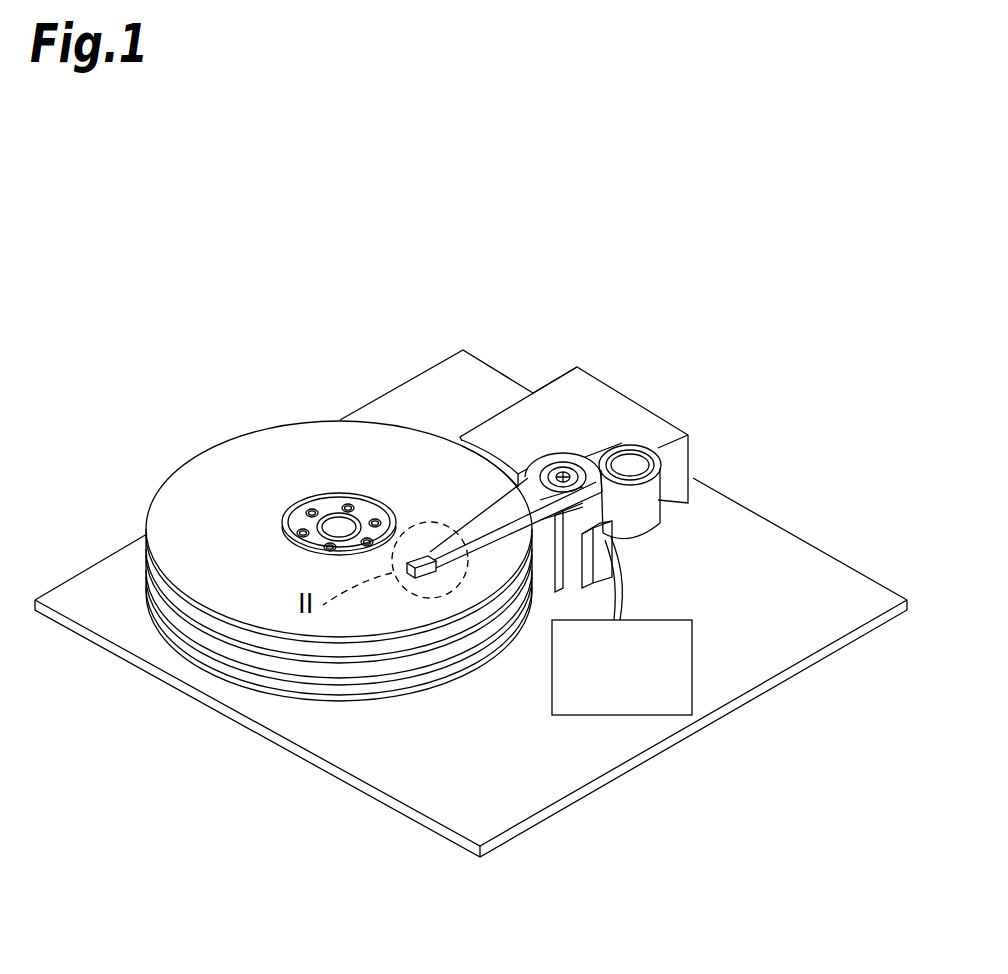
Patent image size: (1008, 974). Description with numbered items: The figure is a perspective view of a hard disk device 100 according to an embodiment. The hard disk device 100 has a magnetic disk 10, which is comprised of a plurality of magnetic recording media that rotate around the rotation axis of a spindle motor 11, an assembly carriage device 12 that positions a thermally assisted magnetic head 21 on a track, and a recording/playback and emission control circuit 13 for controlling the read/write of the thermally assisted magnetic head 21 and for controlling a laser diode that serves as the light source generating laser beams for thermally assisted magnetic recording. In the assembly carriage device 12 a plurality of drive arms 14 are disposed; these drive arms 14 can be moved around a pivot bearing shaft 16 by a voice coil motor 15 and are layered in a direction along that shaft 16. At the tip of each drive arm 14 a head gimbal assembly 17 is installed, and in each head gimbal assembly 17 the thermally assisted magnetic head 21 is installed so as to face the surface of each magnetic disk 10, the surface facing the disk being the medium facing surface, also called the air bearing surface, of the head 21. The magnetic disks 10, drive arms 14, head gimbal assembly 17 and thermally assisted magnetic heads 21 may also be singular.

The hard disk device 100 is at (350, 240).
The magnetic disk 10 is at (215, 425).
The spindle motor 11 is at (336, 516).
The assembly carriage device 12 is at (594, 396).
The control circuit 13 is at (643, 715).
The drive arm 14 is at (480, 527).
The voice coil motor 15 is at (637, 500).
The pivot bearing shaft 16 is at (562, 470).
The head gimbal assembly 17 is at (436, 560).
The thermally assisted magnetic head 21 is at (417, 576).